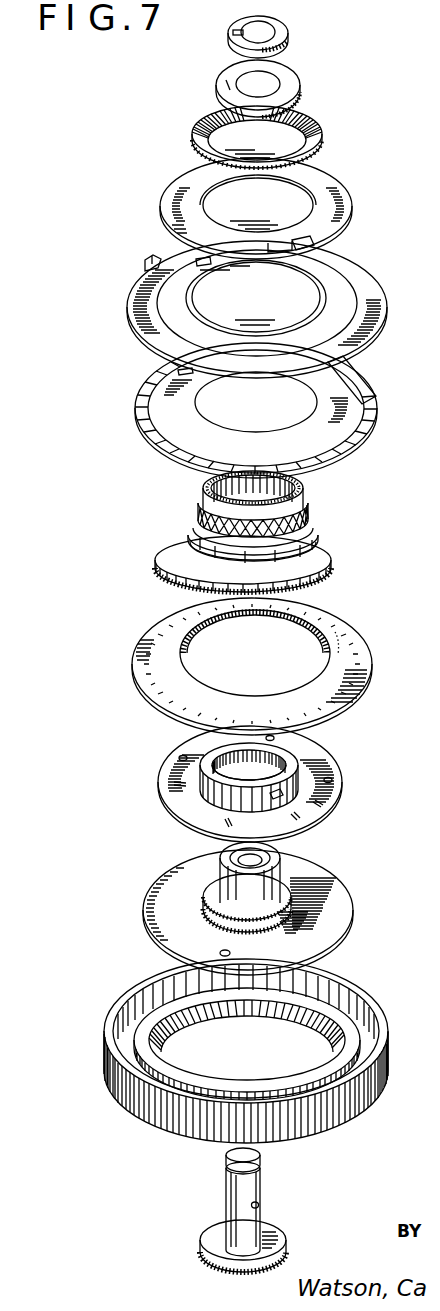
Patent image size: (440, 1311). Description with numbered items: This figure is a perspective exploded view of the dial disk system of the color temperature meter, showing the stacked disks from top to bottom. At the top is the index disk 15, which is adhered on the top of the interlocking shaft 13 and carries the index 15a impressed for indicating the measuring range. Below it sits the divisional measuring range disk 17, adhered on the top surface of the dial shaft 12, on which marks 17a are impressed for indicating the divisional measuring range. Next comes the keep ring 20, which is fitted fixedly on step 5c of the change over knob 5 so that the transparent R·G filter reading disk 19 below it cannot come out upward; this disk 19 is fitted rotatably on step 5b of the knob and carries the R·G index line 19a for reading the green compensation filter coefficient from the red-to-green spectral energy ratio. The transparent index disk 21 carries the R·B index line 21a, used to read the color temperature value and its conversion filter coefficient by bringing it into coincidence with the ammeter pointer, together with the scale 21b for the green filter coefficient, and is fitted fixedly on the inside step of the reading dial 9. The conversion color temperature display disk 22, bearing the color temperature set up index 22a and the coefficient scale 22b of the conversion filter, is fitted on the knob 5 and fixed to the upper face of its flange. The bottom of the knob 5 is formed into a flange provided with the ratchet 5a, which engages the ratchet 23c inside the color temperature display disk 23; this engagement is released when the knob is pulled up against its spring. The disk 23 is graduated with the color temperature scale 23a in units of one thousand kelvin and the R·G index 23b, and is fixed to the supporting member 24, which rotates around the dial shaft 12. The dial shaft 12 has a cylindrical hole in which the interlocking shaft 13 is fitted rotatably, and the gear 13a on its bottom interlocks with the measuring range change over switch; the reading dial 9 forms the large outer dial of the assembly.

The index disk 15 is at (288, 28).
The index 15a is at (236, 24).
The divisional measuring range disk 17 is at (293, 82).
The marks 17a is at (228, 80).
The keep ring 20 is at (313, 137).
The transparent R·G filter reading disk 19 is at (339, 176).
The R·G index line 19a is at (310, 237).
The transparent index disk 21 is at (360, 270).
The R·B index line 21a is at (155, 258).
The scale 21b is at (335, 290).
The conversion color temperature display disk 22 is at (289, 445).
The color temperature set up index 22a is at (190, 375).
The coefficient scale 22b is at (365, 368).
The knob 5 is at (298, 492).
The ratchet 5a is at (322, 582).
The step 5b is at (310, 528).
The step 5c is at (200, 553).
The color temperature display disk 23 is at (365, 663).
The color temperature scale 23a is at (336, 630).
The R·G index 23b is at (190, 686).
The ratchet 23c is at (272, 622).
The supporting member 24 is at (330, 778).
The dial shaft 12 is at (333, 888).
The reading dial 9 is at (380, 1048).
The interlocking shaft 13 is at (262, 1212).
The gear 13a is at (286, 1246).